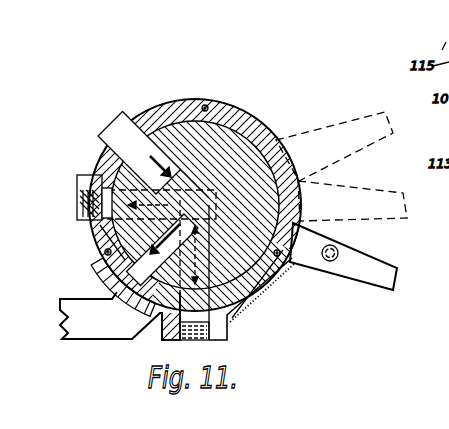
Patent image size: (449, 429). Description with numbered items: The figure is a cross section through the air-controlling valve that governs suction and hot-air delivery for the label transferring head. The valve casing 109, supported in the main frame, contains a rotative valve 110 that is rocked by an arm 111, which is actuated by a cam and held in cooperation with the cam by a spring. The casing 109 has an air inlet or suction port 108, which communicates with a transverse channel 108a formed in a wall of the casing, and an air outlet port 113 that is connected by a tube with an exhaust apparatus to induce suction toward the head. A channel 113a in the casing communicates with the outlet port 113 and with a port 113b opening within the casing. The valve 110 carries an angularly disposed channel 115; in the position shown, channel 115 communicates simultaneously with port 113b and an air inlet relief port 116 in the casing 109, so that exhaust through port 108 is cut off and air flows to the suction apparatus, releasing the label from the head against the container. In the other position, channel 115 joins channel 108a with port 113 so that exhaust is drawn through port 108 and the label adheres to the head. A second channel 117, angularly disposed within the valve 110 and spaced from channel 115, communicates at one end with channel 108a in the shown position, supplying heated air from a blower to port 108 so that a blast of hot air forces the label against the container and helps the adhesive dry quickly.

The air inlet or suction port 108 is at (85, 197).
The transverse channel 108a is at (90, 190).
The valve casing 109 is at (230, 113).
The rotative valve 110 is at (281, 142).
The arm 111 is at (356, 275).
The air outlet port 113 is at (181, 334).
The channel 113a is at (157, 313).
The port 113b is at (130, 268).
The angularly disposed channel 115 is at (204, 196).
The air inlet relief port 116 is at (123, 128).
The channel 117 is at (268, 260).